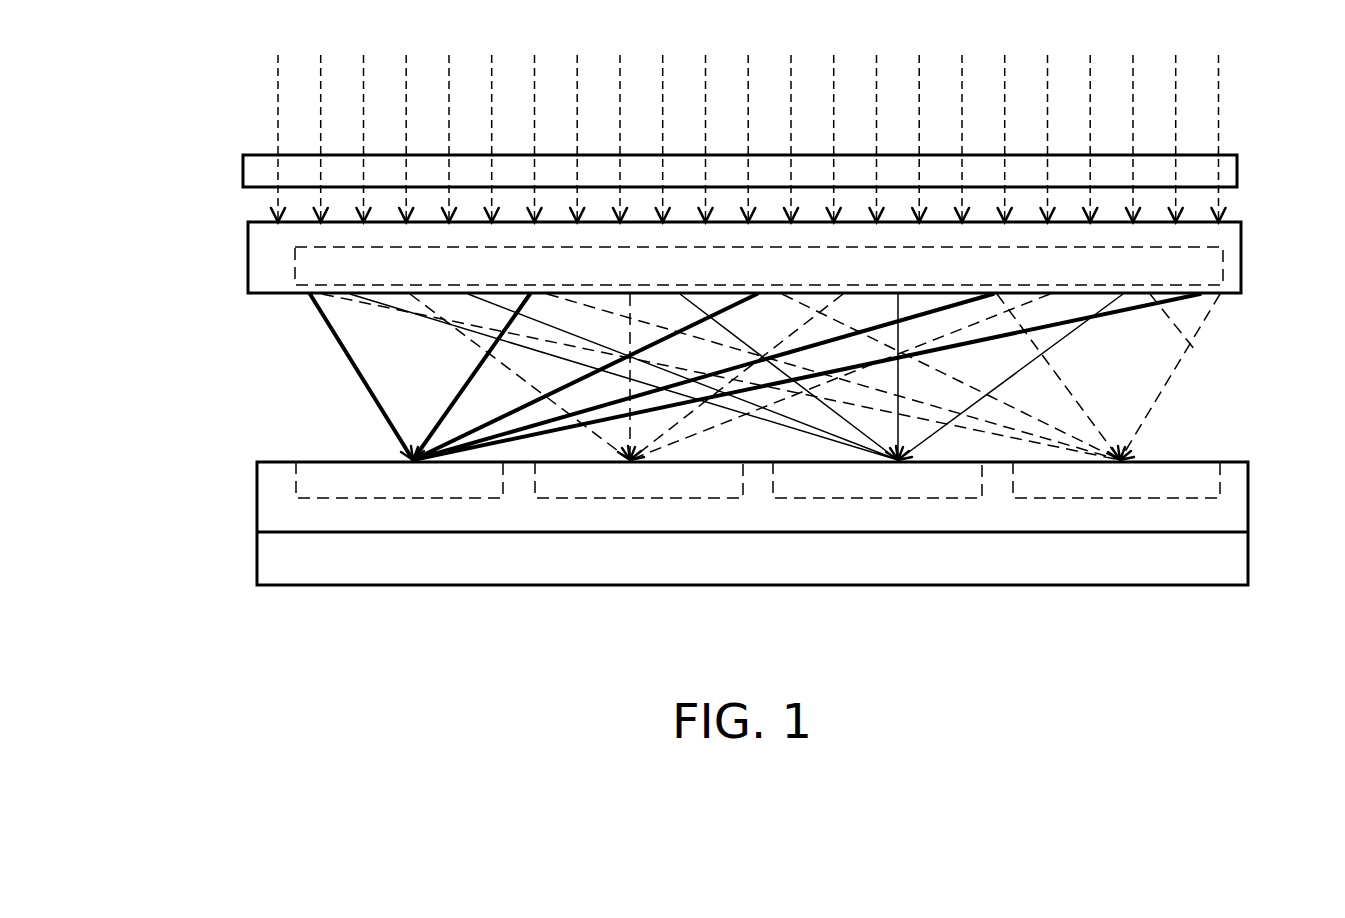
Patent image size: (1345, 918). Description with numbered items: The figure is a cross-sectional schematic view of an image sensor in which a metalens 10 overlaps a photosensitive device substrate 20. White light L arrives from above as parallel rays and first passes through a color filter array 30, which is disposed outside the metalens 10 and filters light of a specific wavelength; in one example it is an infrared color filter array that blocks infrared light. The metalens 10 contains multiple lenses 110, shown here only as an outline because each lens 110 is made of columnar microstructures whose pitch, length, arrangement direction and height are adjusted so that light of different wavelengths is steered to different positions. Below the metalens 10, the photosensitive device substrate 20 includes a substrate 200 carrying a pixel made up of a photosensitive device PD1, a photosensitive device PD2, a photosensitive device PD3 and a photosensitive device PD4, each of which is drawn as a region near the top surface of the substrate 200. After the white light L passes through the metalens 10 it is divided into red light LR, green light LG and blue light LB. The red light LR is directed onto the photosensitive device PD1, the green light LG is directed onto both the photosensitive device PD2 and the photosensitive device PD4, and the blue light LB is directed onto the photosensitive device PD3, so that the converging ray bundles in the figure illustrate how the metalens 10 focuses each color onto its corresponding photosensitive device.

The white light L is at (1219, 78).
The color filter array 30 is at (256, 170).
The metalens 10 is at (262, 256).
The lens 110 is at (1223, 266).
The red light LR is at (355, 368).
The green light LG is at (1178, 360).
The blue light LB is at (1017, 373).
The photosensitive device substrate 20 is at (766, 557).
The substrate 200 is at (1237, 563).
The photosensitive device PD1 is at (390, 498).
The photosensitive device PD2 is at (628, 498).
The photosensitive device PD3 is at (866, 498).
The photosensitive device PD4 is at (1105, 498).